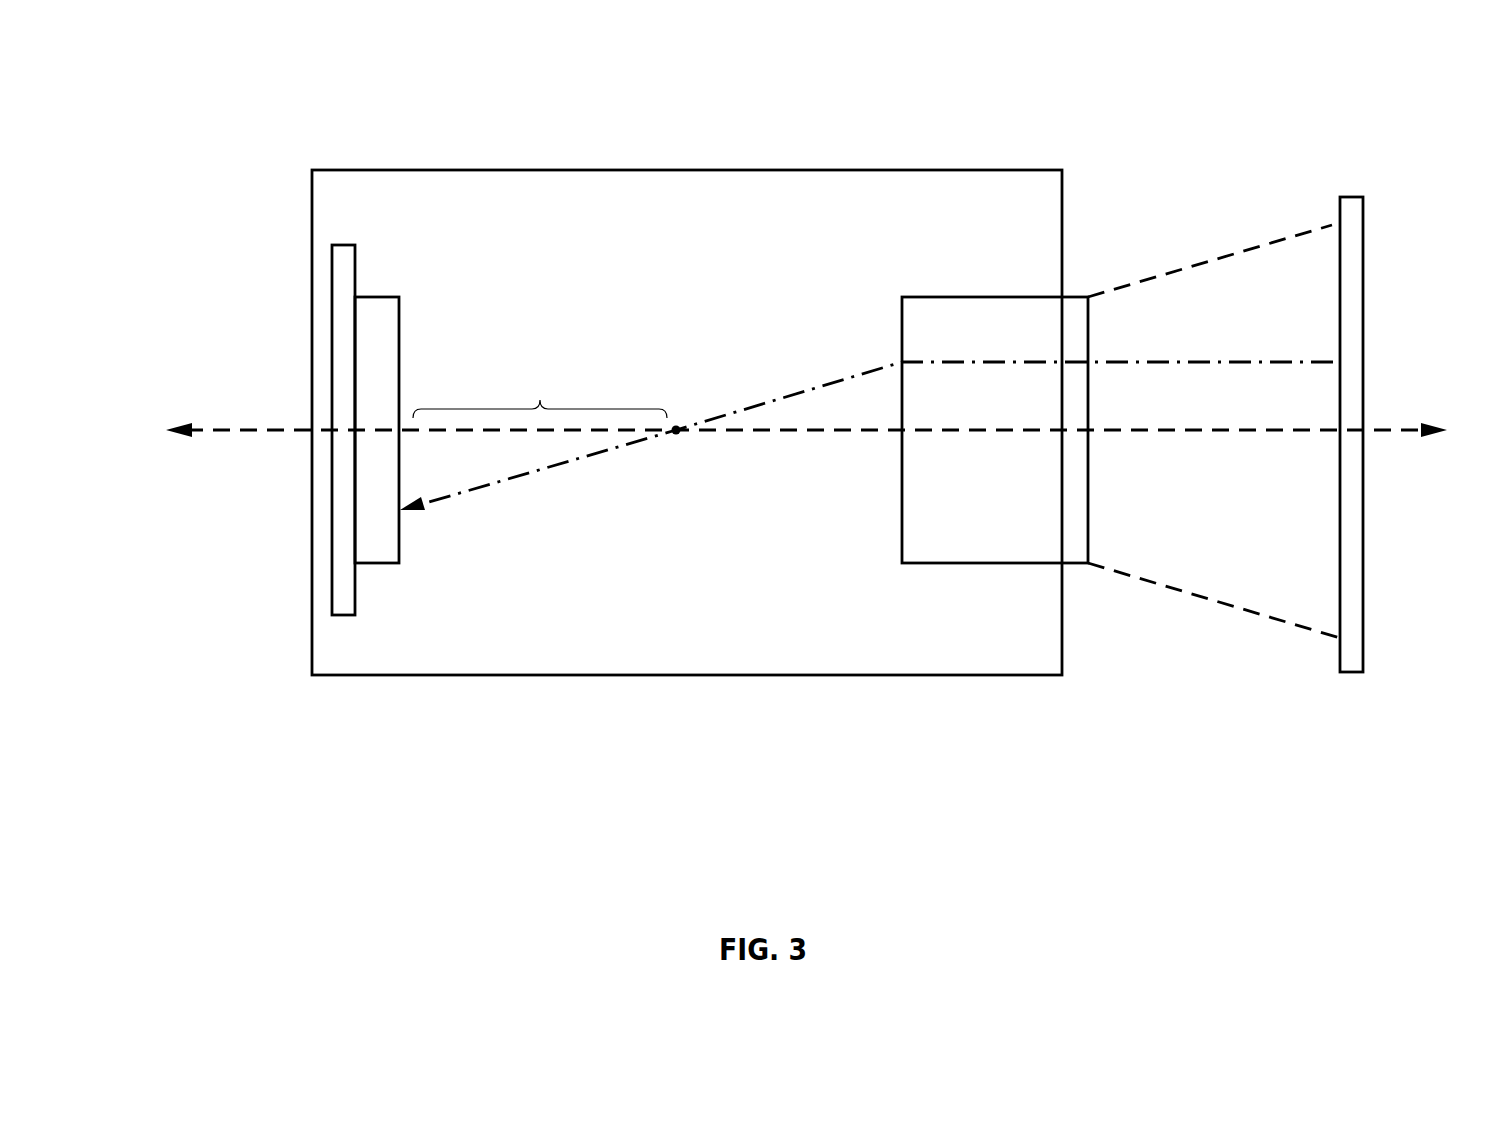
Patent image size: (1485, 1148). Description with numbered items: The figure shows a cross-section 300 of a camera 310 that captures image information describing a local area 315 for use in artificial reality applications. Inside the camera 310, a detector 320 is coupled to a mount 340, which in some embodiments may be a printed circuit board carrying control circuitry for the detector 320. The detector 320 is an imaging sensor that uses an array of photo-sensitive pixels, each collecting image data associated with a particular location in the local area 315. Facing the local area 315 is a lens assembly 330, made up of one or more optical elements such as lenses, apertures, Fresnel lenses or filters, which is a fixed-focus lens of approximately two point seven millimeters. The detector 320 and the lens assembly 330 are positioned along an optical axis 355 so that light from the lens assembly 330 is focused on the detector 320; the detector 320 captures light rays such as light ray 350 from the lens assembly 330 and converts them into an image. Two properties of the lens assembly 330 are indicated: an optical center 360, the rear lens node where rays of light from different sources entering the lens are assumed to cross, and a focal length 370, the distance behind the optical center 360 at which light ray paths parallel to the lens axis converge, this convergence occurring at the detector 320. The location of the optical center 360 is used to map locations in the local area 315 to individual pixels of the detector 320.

The cross-section 300 is at (124, 62).
The camera 310 is at (365, 136).
The local area 315 is at (1093, 190).
The detector 320 is at (412, 306).
The lens assembly 330 is at (1025, 297).
The mount 340 is at (333, 246).
The light ray 350 is at (808, 390).
The optical axis 355 is at (255, 432).
The optical center 360 is at (676, 428).
The focal length 370 is at (540, 379).